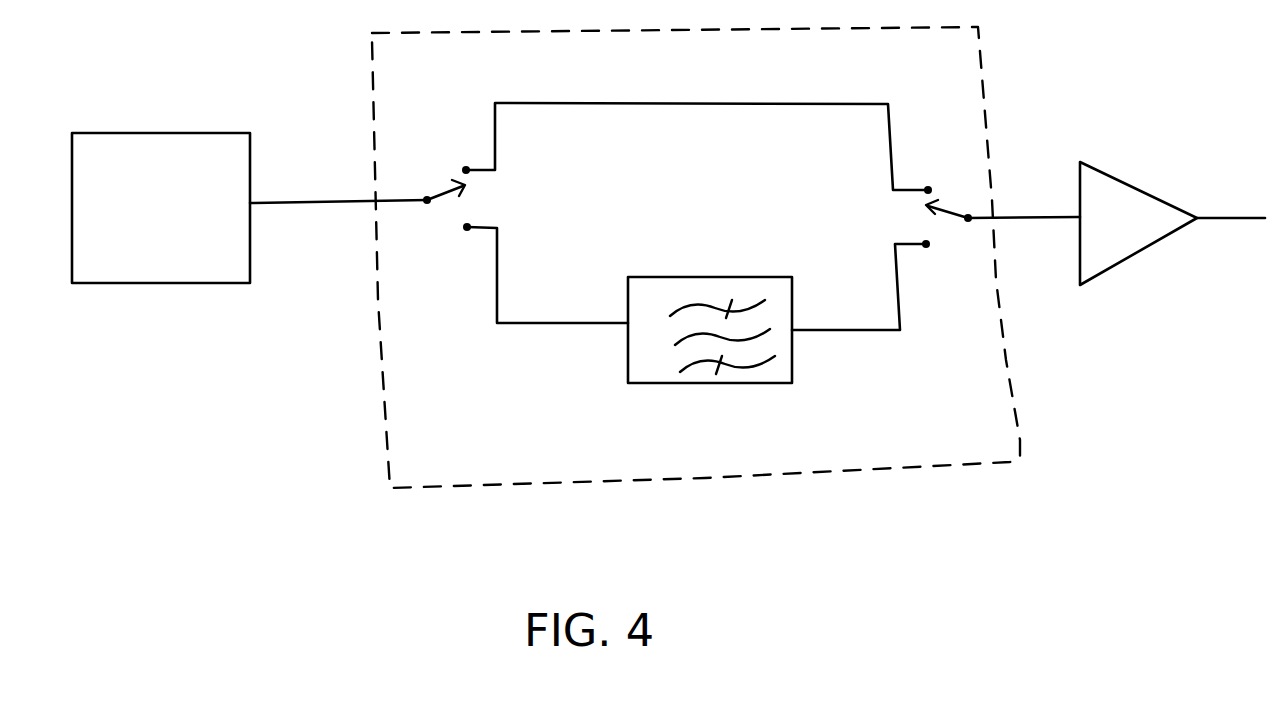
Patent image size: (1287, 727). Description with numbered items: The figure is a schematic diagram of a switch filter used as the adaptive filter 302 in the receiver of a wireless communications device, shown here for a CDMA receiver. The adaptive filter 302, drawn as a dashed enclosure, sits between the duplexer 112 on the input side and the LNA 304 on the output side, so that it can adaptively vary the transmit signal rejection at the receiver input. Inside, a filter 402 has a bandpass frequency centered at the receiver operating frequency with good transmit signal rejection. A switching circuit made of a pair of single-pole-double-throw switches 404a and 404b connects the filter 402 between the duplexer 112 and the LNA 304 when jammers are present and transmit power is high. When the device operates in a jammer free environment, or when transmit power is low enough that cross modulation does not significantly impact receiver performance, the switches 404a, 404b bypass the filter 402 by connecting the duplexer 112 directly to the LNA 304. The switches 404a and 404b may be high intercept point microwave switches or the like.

The duplexer 112 is at (132, 294).
The adaptive filter 302 is at (985, 464).
The LNA 304 is at (1138, 256).
The filter 402 is at (710, 385).
The SPDT switch 404a is at (675, 213).
The SPDT switch 404b is at (936, 258).